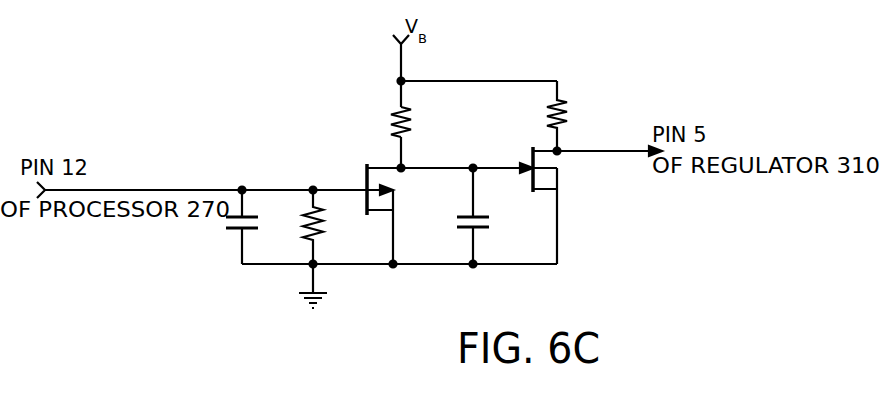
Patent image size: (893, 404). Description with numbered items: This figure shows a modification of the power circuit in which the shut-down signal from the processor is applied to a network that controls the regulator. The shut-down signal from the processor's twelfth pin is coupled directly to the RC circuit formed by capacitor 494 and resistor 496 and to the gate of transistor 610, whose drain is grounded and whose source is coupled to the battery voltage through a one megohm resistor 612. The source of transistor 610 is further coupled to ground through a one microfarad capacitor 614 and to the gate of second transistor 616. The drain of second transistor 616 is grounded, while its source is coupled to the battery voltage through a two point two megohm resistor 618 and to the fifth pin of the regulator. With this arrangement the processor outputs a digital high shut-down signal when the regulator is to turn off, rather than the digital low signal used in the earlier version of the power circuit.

The capacitor 494 is at (215, 230).
The resistor 496 is at (297, 238).
The transistor 610 is at (358, 173).
The resistor 612 is at (383, 117).
The capacitor 614 is at (465, 238).
The second transistor 616 is at (575, 172).
The resistor 618 is at (575, 112).